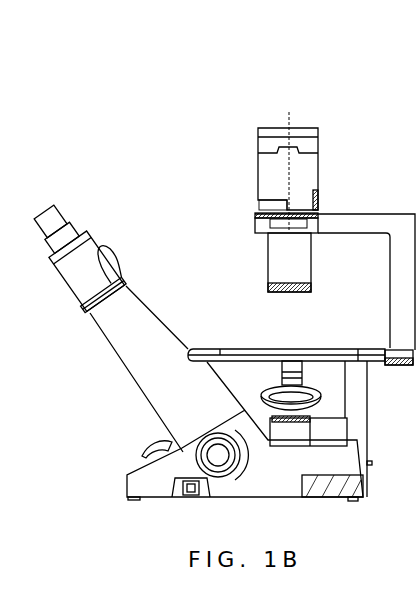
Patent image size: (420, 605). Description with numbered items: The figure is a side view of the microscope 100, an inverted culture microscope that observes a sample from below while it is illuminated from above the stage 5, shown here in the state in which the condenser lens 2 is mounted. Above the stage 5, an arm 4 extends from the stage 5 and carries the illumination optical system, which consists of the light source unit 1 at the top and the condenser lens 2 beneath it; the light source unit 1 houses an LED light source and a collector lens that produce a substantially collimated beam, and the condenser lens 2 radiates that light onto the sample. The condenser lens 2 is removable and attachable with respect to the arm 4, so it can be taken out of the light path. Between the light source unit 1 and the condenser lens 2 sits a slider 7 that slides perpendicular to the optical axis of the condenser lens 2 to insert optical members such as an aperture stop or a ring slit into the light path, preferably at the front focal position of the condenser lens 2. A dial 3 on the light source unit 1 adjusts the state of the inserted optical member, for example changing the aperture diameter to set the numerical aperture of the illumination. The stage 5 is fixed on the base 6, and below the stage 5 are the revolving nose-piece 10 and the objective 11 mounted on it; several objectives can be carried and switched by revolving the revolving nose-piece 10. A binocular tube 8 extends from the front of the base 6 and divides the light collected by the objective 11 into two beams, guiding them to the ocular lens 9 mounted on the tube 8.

The microscope 100 is at (344, 91).
The light source unit 1 is at (313, 178).
The condenser lens 2 is at (312, 268).
The dial 3 is at (243, 203).
The arm 4 is at (391, 288).
The stage 5 is at (328, 348).
The base 6 is at (368, 419).
The slider 7 is at (256, 218).
The tube 8 is at (68, 284).
The ocular lens 9 is at (54, 243).
The revolving nose-piece 10 is at (276, 391).
The objective 11 is at (300, 385).